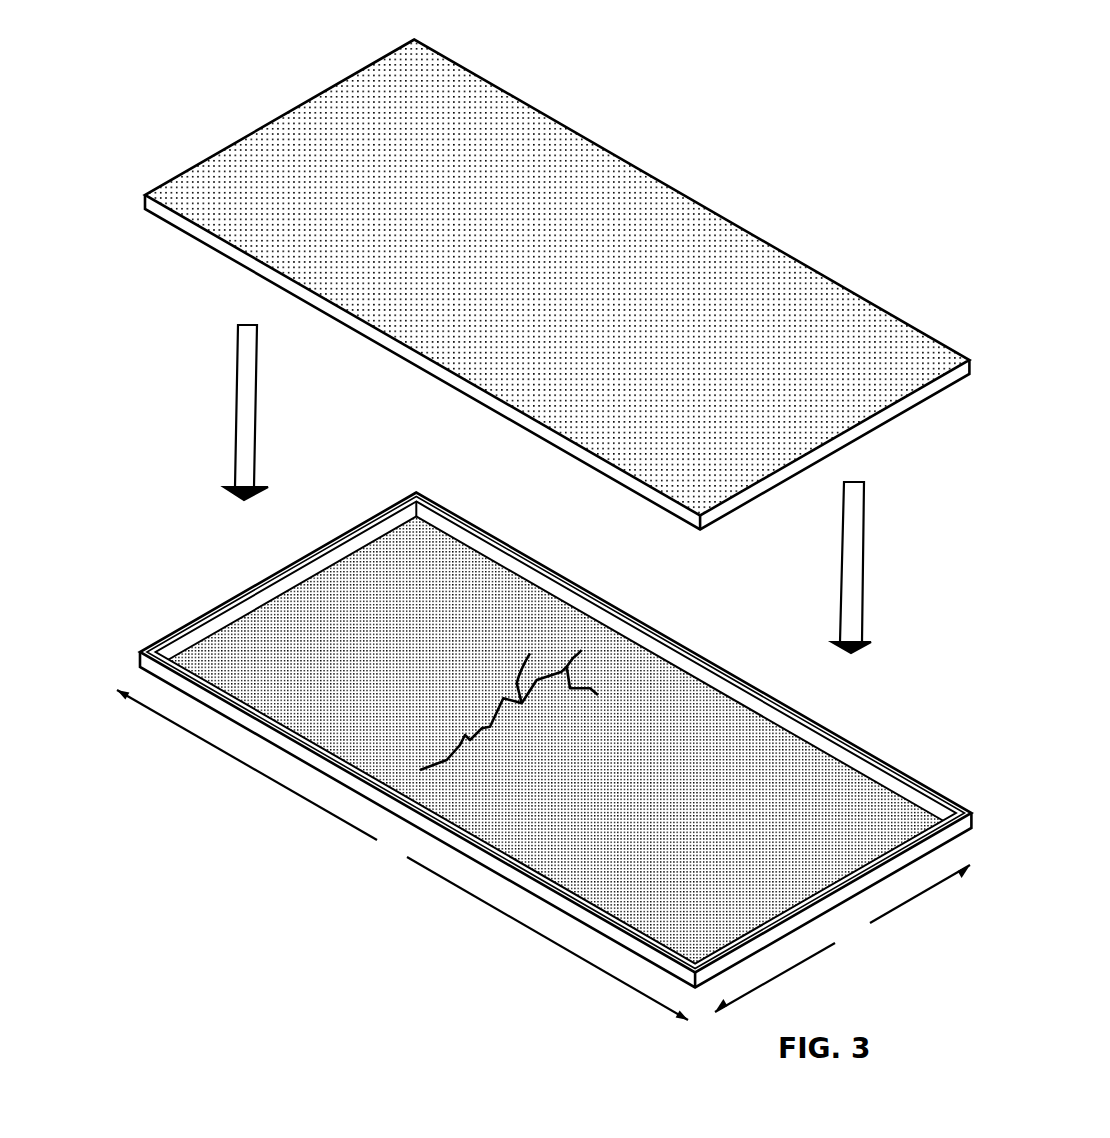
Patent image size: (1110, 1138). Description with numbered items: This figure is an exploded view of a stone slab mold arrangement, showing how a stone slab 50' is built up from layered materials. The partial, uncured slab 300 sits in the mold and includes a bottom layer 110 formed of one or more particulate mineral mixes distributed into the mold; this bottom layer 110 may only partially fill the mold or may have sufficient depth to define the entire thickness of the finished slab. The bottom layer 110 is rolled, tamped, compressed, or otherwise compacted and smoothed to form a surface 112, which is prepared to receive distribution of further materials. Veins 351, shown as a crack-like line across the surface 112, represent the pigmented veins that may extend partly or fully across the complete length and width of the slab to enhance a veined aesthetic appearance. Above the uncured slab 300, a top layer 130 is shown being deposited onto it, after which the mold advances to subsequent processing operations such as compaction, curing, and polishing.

The stone slab 50' is at (463, 335).
The top layer 130 is at (286, 113).
The partial, uncured slab 300 is at (132, 580).
The bottom layer 110 is at (228, 632).
The surface 112 is at (320, 615).
The veins 351 is at (557, 625).